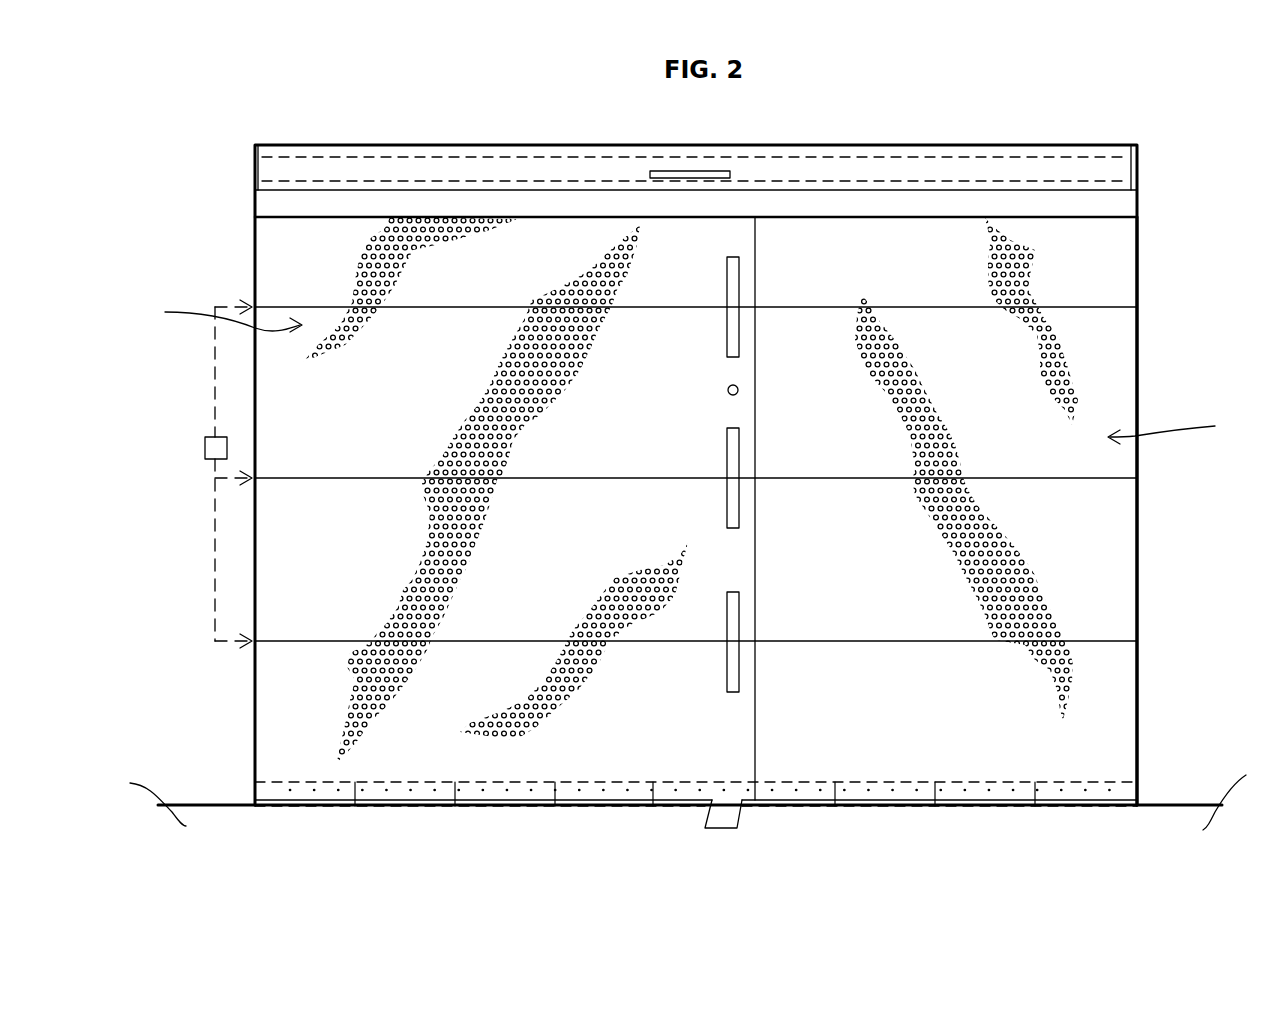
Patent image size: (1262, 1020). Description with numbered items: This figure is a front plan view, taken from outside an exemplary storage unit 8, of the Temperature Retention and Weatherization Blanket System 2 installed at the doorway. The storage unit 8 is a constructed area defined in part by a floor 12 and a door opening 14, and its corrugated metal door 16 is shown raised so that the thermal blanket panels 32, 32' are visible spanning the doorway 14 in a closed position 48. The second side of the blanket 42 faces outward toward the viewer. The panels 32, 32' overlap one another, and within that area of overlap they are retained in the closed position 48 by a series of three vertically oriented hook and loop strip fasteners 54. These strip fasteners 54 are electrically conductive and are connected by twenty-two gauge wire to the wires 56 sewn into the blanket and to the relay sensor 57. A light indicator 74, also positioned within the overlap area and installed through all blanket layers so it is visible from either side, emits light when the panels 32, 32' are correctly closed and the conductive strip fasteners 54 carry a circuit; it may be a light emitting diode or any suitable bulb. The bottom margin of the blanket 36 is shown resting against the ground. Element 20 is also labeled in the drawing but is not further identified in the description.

The Temperature Retention and Weatherization Blanket System 2 is at (1165, 117).
The storage unit 8 is at (703, 141).
The floor 12 is at (988, 806).
The door opening 14 is at (695, 371).
The corrugated metal door 16 is at (496, 185).
The top rail 20 is at (1130, 215).
The thermal blanket panel 32 is at (1171, 511).
The thermal blanket panel 32' is at (217, 474).
The bottom margin of the blanket 36 is at (1130, 800).
The second side of the blanket 42 is at (626, 475).
The closed position 48 is at (755, 347).
The hook and loop strip fastener 54 is at (733, 280).
The wires 56 is at (430, 307).
The relay sensor 57 is at (205, 444).
The light indicator 74 is at (727, 390).